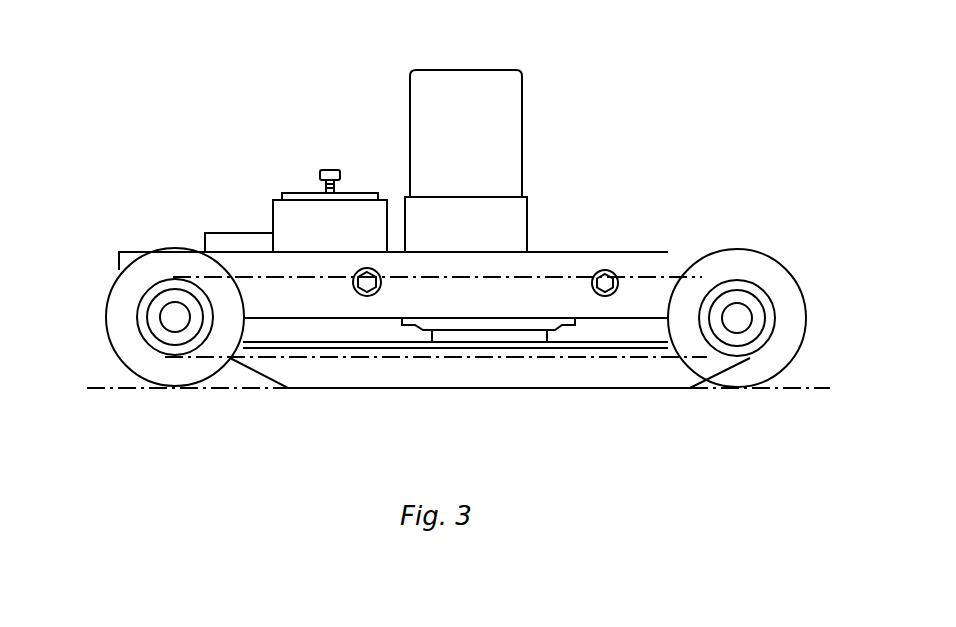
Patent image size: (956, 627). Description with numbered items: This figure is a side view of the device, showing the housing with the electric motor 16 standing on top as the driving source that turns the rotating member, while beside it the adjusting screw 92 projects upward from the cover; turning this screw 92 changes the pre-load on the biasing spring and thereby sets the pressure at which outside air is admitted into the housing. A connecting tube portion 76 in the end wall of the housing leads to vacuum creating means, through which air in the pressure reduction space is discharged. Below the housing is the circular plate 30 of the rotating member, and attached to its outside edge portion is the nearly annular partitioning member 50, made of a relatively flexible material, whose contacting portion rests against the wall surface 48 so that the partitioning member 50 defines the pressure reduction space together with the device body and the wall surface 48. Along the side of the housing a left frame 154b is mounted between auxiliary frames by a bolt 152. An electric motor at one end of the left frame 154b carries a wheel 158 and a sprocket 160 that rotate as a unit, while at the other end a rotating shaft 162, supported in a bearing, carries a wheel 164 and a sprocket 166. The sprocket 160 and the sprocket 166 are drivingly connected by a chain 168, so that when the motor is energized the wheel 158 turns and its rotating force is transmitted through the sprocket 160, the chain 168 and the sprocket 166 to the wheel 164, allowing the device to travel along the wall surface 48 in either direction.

The electric motor 16 is at (517, 100).
The circular plate 30 is at (363, 347).
The wall surface 48 is at (821, 390).
The partitioning member 50 is at (263, 379).
The connecting tube portion 76 is at (243, 242).
The adjusting screw 92 is at (319, 177).
The bolt 152 is at (622, 287).
The left frame 154b is at (535, 257).
The wheel 158 is at (113, 332).
The sprocket 160 is at (148, 287).
The rotating shaft 162 is at (750, 329).
The wheel 164 is at (752, 373).
The sprocket 166 is at (757, 282).
The chain 168 is at (570, 278).